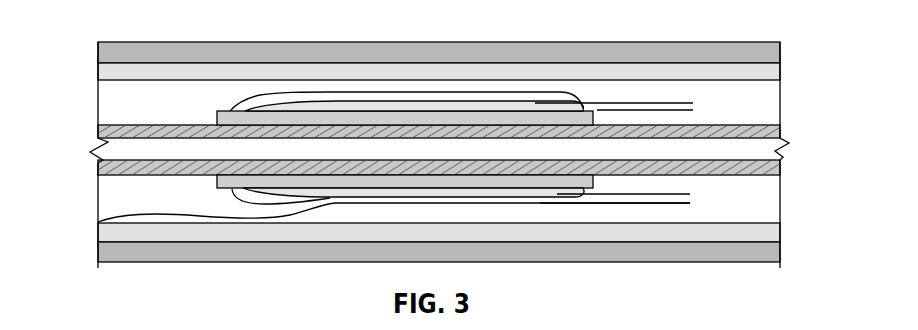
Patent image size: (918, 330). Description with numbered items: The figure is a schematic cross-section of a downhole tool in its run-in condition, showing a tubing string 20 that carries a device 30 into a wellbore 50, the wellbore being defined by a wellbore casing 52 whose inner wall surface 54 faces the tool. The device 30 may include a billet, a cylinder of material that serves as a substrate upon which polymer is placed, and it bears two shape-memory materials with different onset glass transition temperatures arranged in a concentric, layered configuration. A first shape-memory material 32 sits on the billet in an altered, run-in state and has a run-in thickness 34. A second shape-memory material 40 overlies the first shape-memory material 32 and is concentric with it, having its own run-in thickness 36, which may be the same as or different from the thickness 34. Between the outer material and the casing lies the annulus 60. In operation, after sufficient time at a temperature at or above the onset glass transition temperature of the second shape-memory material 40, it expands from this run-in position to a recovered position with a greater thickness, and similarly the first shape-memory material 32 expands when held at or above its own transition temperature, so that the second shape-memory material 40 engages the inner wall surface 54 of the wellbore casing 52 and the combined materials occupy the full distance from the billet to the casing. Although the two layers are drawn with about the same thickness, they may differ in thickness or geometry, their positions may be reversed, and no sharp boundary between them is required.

The tubing string 20 is at (153, 125).
The device 30 is at (218, 112).
The first shape-memory material 32 is at (335, 200).
The run-in thickness of first shape-memory material 34 is at (624, 146).
The run-in thickness of second shape-memory material 36 is at (665, 155).
The second shape-memory material 40 is at (98, 222).
The wellbore 50 is at (723, 241).
The wellbore casing 52 is at (780, 235).
The inner wall surface 54 is at (753, 81).
The annulus 60 is at (758, 198).